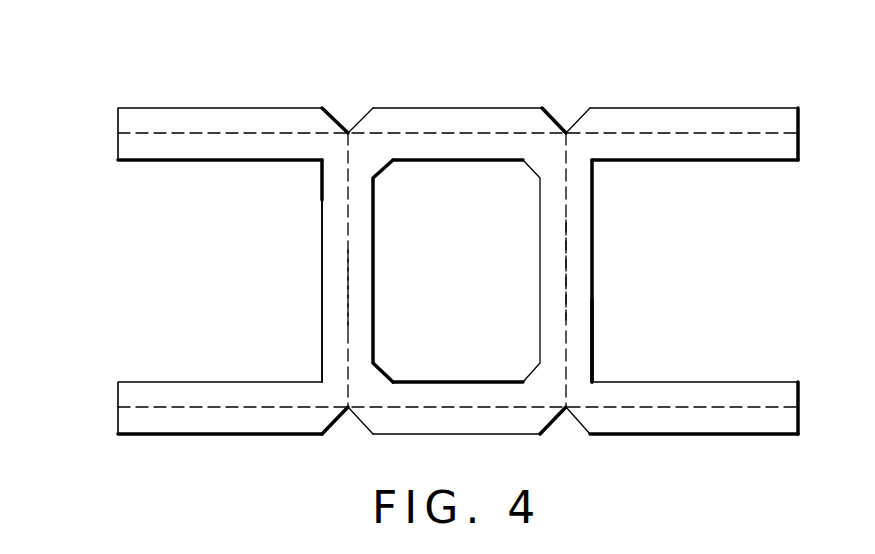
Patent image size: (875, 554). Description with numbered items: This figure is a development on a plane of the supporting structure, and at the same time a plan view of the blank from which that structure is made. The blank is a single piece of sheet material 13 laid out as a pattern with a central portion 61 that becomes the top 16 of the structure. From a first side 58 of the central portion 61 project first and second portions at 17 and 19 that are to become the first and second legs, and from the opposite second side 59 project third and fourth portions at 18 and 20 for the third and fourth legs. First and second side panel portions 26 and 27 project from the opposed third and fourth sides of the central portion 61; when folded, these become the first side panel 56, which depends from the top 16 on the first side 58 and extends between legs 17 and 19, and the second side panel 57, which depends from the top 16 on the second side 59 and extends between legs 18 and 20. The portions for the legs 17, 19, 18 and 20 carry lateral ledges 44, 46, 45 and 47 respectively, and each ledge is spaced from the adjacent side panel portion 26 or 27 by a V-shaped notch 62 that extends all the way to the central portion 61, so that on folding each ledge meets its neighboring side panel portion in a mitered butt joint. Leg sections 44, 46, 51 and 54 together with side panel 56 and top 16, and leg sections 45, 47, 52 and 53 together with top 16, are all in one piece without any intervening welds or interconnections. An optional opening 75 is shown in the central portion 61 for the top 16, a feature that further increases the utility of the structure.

The sheet material 13 is at (325, 235).
The top 16 is at (441, 394).
The leg 17 is at (180, 394).
The leg 18 is at (730, 395).
The leg 19 is at (212, 147).
The leg 20 is at (725, 142).
The first side panel portion 26 is at (460, 437).
The second side panel portion 27 is at (455, 118).
The lateral ledge 44 is at (223, 427).
The lateral ledge 45 is at (693, 425).
The lateral ledge 46 is at (170, 115).
The lateral ledge 47 is at (677, 118).
The leg section 51 is at (322, 393).
The leg section 52 is at (588, 393).
The leg section 53 is at (590, 143).
The leg section 54 is at (322, 145).
The first side panel 56 is at (333, 313).
The second side panel 57 is at (582, 263).
The first side 58 is at (458, 270).
The second side 59 is at (537, 270).
The central portion 61 is at (473, 150).
The V-shaped notch 62 is at (347, 130).
The opening 75 is at (456, 271).